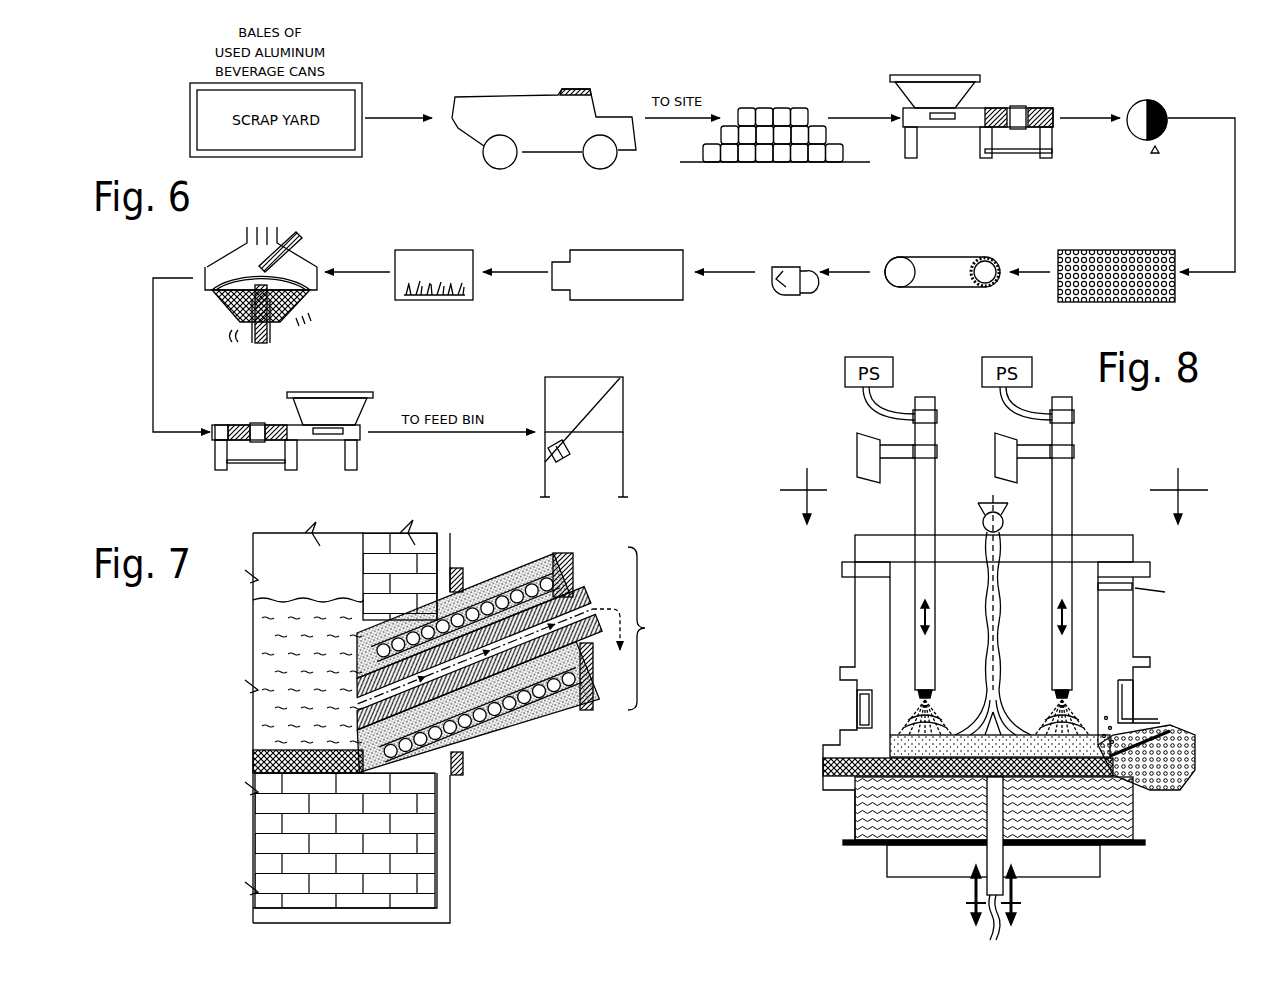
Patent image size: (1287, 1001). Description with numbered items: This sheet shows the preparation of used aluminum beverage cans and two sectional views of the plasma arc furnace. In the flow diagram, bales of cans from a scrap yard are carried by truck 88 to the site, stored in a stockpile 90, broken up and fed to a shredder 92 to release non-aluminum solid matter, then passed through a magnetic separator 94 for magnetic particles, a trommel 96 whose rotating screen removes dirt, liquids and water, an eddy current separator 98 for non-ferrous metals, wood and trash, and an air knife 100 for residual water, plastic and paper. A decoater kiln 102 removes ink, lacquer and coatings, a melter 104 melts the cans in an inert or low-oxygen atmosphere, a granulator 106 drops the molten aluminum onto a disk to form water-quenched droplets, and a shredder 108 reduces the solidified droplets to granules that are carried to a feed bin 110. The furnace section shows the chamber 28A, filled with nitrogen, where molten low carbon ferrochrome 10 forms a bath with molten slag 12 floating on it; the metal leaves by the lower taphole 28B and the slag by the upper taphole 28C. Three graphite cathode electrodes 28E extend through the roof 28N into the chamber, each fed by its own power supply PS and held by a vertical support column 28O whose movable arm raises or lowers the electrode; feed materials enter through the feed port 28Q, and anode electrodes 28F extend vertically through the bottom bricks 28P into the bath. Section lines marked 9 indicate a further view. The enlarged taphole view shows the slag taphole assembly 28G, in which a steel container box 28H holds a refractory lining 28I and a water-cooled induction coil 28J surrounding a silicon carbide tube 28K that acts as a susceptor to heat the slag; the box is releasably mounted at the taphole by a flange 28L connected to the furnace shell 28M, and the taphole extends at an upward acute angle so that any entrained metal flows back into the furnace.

In FIG. 6, the haul truck 88 is at (527, 92).
In FIG. 6, the stockpile 90 is at (770, 108).
In FIG. 6, the shredder 92 is at (988, 108).
In FIG. 6, the magnetic separator 94 is at (1150, 100).
In FIG. 6, the trommel 96 is at (1140, 251).
In FIG. 6, the eddy current separator 98 is at (946, 259).
In FIG. 6, the air knife 100 is at (796, 270).
In FIG. 6, the decoater kiln 102 is at (615, 250).
In FIG. 6, the melter 104 is at (437, 250).
In FIG. 6, the granulator 106 is at (303, 262).
In FIG. 6, the shredder 108 is at (362, 397).
In FIG. 6, the feed bin 110 is at (627, 414).
In FIG. 7, the molten low carbon ferrochrome 10 is at (260, 762).
In FIG. 8, the molten low carbon ferrochrome 10 is at (900, 753).
In FIG. 7, the molten slag 12 is at (260, 713).
In FIG. 8, the molten slag 12 is at (913, 740).
In FIG. 8, the section line 9 is at (994, 496).
In FIG. 7, the chamber 28A is at (285, 570).
In FIG. 8, the chamber 28A is at (903, 648).
In FIG. 8, the lower outlet or taphole 28B is at (825, 770).
In FIG. 7, the upper outlet or taphole 28C is at (522, 710).
In FIG. 8, the upper outlet or taphole 28C is at (1180, 727).
In FIG. 8, the cathode electrodes 28E is at (922, 580).
In FIG. 8, the anode electrodes 28F is at (993, 815).
In FIG. 7, the slag taphole assembly 28G is at (494, 670).
In FIG. 8, the slag taphole assembly 28G is at (1163, 725).
In FIG. 7, the steel container box 28H is at (560, 577).
In FIG. 7, the refractory lining 28I is at (500, 573).
In FIG. 7, the water-cooled induction coil 28J is at (490, 728).
In FIG. 7, the silicon carbide tube 28K is at (587, 607).
In FIG. 7, the flange 28L is at (457, 778).
In FIG. 7, the shell 28M is at (443, 880).
In FIG. 8, the shell 28M is at (1113, 655).
In FIG. 8, the roof 28N is at (1090, 545).
In FIG. 8, the vertical support columns 28O is at (862, 468).
In FIG. 7, the bricks 28P is at (283, 848).
In FIG. 8, the bricks 28P is at (875, 808).
In FIG. 8, the feed port 28Q is at (1008, 503).